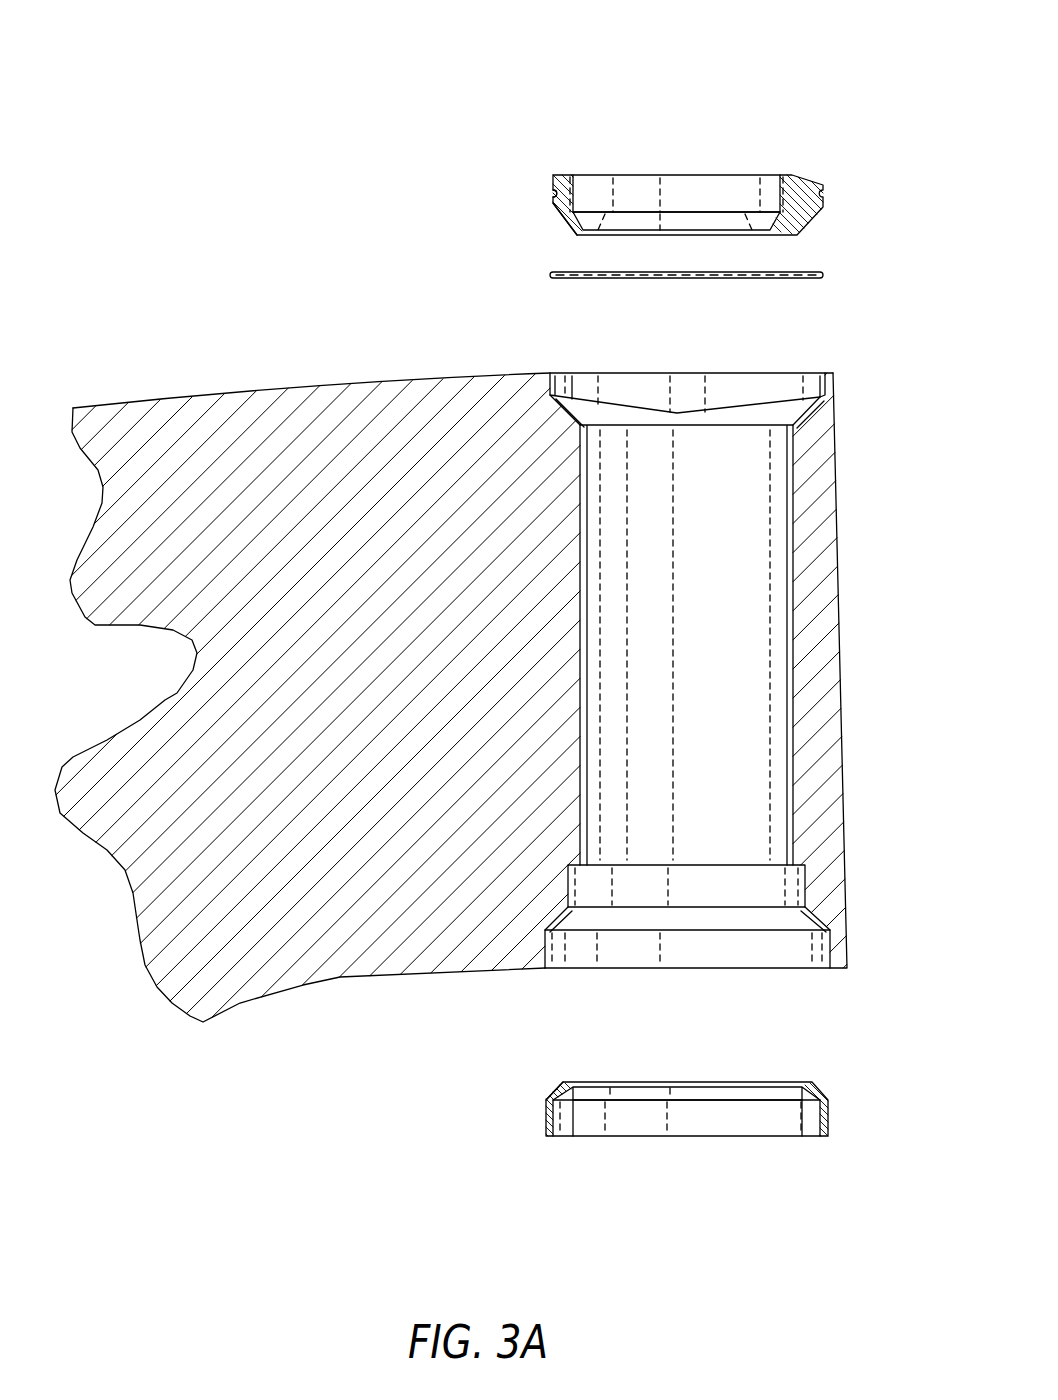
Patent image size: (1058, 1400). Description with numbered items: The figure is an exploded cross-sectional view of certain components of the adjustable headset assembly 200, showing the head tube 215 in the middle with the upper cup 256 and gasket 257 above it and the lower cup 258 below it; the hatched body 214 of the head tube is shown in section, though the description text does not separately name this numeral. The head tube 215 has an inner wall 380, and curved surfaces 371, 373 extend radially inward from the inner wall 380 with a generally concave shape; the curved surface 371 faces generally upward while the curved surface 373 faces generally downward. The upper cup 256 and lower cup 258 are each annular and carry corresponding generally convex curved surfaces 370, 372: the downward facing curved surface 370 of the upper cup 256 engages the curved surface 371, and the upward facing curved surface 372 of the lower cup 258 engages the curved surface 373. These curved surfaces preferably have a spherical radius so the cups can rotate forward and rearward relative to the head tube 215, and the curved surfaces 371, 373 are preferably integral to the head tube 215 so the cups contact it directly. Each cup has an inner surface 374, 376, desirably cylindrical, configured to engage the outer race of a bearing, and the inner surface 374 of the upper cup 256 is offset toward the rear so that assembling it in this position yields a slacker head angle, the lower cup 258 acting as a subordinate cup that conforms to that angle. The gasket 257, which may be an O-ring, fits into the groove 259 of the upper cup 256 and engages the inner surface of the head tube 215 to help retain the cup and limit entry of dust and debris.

The adjustable headset assembly 200 is at (815, 92).
The valve body 214 is at (262, 410).
The head tube 215 is at (846, 660).
The upper cup 256 is at (822, 201).
The gasket 257 is at (826, 276).
The lower cup 258 is at (830, 1120).
The groove 259 is at (555, 193).
The curved surface 370 is at (562, 220).
The curved surface 371 is at (548, 420).
The curved surface 372 is at (556, 1096).
The curved surface 373 is at (555, 912).
The inner surface 374 is at (667, 192).
The inner surface 376 is at (623, 1128).
The inner wall 380 is at (835, 375).